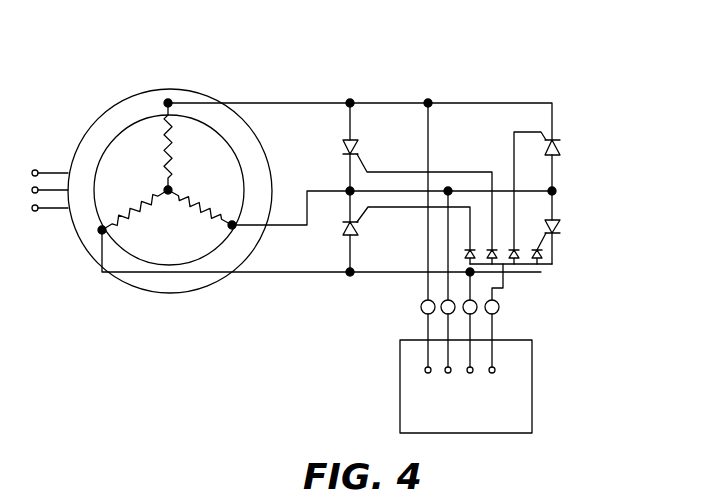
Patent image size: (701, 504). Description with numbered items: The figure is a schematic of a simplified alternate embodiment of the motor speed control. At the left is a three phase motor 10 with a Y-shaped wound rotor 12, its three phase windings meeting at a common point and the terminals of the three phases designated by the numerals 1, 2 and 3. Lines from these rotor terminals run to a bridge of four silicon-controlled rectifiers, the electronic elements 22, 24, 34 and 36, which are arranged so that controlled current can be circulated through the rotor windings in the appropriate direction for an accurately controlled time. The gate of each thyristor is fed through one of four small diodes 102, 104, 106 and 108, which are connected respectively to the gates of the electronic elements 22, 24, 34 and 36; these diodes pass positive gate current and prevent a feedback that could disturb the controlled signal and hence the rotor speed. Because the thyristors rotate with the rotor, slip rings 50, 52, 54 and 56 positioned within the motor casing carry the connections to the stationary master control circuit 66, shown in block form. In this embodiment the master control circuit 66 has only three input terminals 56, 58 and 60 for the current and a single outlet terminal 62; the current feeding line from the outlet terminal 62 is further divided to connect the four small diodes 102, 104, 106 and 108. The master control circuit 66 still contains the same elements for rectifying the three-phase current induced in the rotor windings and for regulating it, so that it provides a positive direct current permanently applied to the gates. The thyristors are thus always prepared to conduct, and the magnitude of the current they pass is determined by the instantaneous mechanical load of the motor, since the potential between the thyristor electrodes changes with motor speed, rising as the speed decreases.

The three phase motor 10 is at (133, 90).
The wound rotor 12 is at (182, 113).
The rotor phase terminal 1 is at (177, 146).
The rotor phase terminal 2 is at (200, 214).
The rotor phase terminal 3 is at (135, 208).
The silicon-controlled rectifier 22 is at (348, 142).
The silicon-controlled rectifier 24 is at (555, 138).
The silicon-controlled rectifier 34 is at (357, 230).
The silicon-controlled rectifier 36 is at (560, 233).
The slip ring 50 is at (427, 300).
The slip ring 52 is at (445, 313).
The slip ring 54 is at (474, 315).
The slip ring / input terminal 56 is at (498, 300).
The input terminal 58 is at (449, 375).
The input terminal 60 is at (473, 373).
The outlet terminal 62 is at (498, 367).
The master control circuit 66 is at (485, 425).
The small diode 102 is at (467, 250).
The small diode 104 is at (494, 248).
The small diode 106 is at (518, 247).
The small diode 108 is at (543, 263).